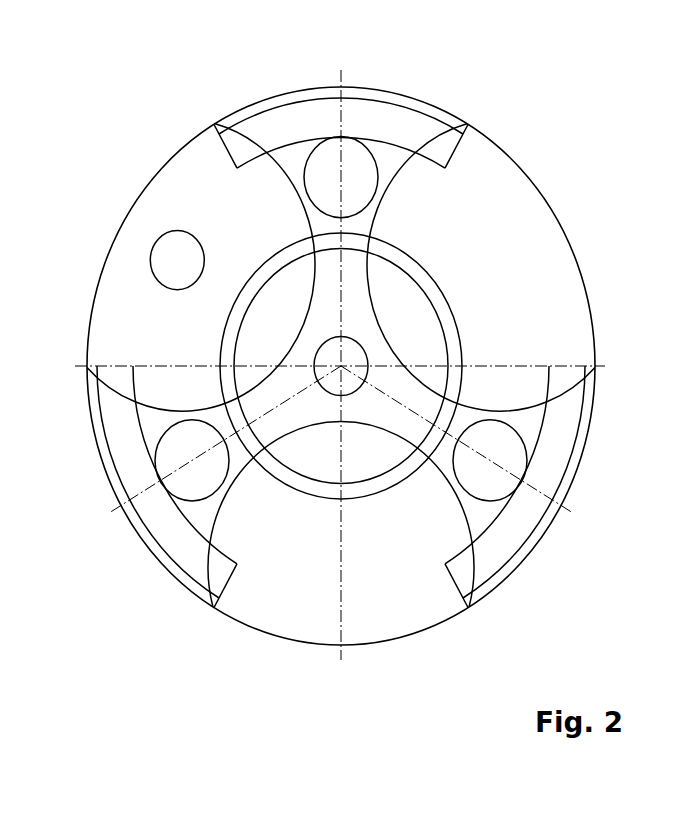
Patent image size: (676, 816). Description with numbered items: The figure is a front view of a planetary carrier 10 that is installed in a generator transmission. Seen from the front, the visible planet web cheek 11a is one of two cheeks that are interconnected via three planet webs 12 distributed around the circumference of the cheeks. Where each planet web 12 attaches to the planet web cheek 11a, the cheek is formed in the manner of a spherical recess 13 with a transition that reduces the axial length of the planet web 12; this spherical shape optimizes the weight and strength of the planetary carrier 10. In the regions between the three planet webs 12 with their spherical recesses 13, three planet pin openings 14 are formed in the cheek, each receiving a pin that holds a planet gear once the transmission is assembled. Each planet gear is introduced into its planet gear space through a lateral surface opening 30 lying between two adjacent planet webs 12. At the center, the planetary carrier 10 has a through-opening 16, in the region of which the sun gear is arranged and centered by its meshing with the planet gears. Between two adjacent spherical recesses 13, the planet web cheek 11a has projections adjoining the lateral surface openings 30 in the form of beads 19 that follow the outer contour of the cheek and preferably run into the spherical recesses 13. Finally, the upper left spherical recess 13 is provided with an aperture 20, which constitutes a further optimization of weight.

The planetary carrier 10 is at (148, 657).
The planet web cheek 11a is at (453, 523).
The planet web 12 is at (180, 148).
The spherical recess 13 is at (180, 187).
The planet pin opening 14 is at (353, 163).
The through-opening 16 is at (388, 440).
The bead 19 is at (405, 127).
The aperture 20 is at (170, 253).
The lateral surface opening 30 is at (270, 91).